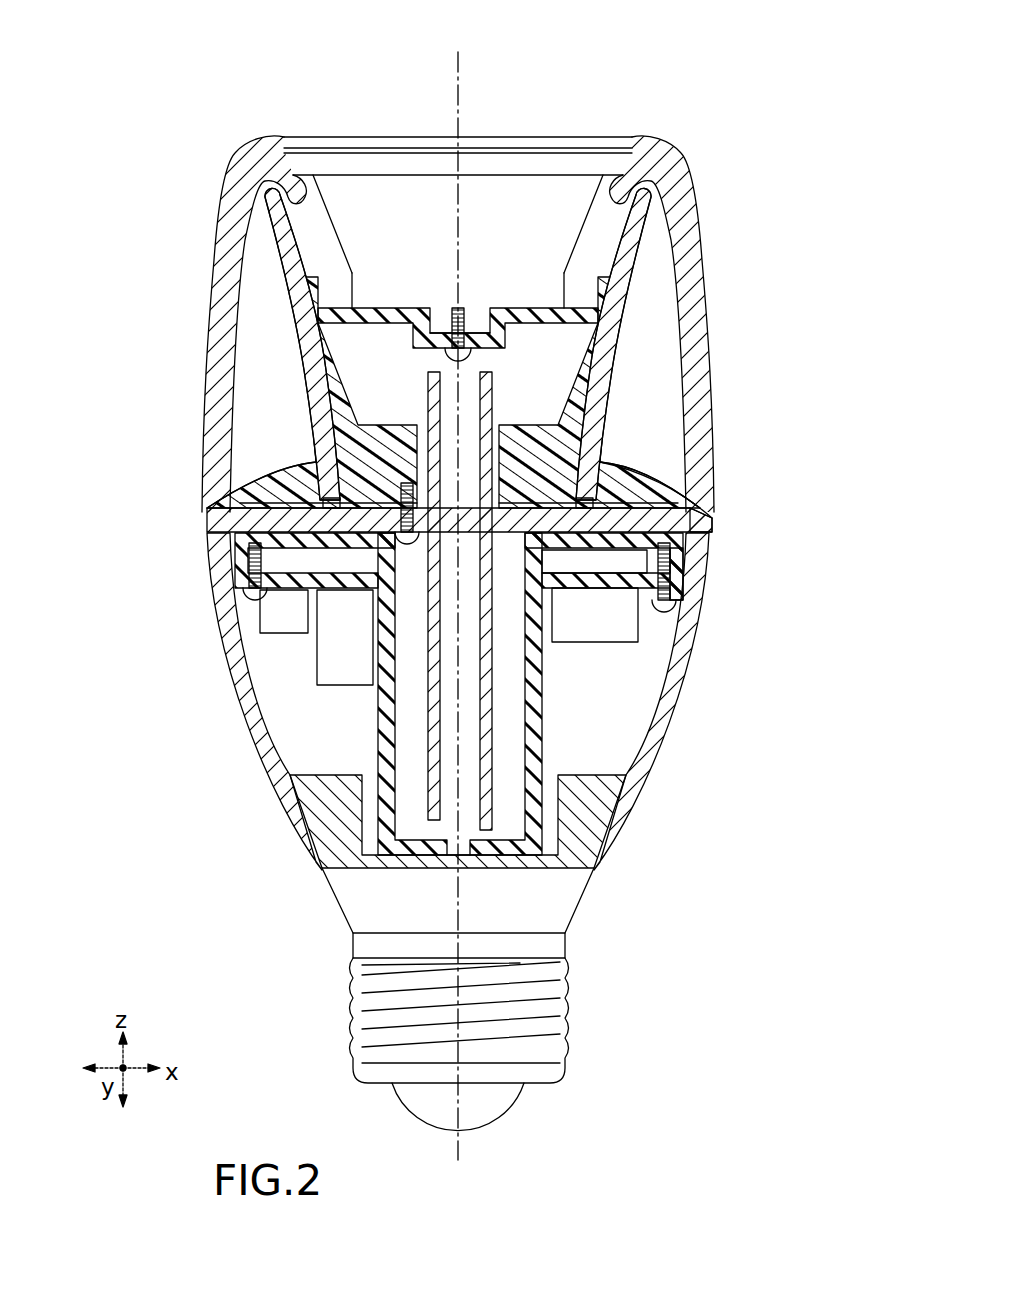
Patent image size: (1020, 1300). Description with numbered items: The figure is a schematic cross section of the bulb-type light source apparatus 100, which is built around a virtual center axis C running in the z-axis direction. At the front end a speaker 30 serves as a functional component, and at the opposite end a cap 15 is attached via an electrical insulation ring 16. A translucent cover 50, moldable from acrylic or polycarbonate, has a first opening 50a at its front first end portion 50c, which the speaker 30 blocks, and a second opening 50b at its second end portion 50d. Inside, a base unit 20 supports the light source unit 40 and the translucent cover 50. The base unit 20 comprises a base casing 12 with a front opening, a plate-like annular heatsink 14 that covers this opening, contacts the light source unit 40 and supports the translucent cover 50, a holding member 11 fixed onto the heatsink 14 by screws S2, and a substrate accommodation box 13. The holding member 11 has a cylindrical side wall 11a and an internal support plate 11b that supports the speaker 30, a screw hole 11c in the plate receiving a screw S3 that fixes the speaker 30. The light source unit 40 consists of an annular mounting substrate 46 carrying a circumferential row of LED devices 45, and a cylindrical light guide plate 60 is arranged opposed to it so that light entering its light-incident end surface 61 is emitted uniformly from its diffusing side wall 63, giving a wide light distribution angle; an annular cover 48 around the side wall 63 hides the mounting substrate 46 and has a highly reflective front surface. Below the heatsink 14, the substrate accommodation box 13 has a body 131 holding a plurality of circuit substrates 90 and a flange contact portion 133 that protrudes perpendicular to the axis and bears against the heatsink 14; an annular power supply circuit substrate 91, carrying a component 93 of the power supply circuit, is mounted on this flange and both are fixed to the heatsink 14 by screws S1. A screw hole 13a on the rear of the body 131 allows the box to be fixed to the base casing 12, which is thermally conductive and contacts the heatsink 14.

The light source apparatus 100 is at (357, 86).
The virtual center axis C is at (458, 97).
The speaker 30 is at (551, 136).
The translucent cover 50 is at (476, 465).
The first opening 50a is at (327, 174).
The second opening 50b is at (700, 540).
The first end portion 50c is at (650, 134).
The second end portion 50d is at (712, 513).
The base unit 20 is at (102, 418).
The holding member 11 is at (400, 362).
The cylindrical side wall 11a is at (336, 397).
The support plate 11b is at (382, 306).
The screw hole 11c is at (438, 337).
The heatsink 14 is at (218, 523).
The base casing 12 is at (378, 718).
The substrate accommodation box 13 is at (268, 737).
The screw hole 13a is at (455, 868).
The light guide plate 60 is at (633, 300).
The light-incident end surface 61 is at (332, 496).
The side wall 63 is at (600, 382).
The light source unit 40 is at (812, 348).
The LED devices 45 is at (600, 462).
The mounting substrate 46 is at (650, 495).
The annular cover 48 is at (668, 498).
The body 131 is at (530, 690).
The flange contact portion 133 is at (677, 560).
The screws S1 is at (257, 603).
The screws S2 is at (407, 546).
The screw S3 is at (463, 302).
The circuit substrates 90 is at (440, 767).
The power supply circuit substrate 91 is at (595, 600).
The component 93 is at (628, 634).
The electrical insulation ring 16 is at (558, 950).
The cap 15 is at (557, 1000).